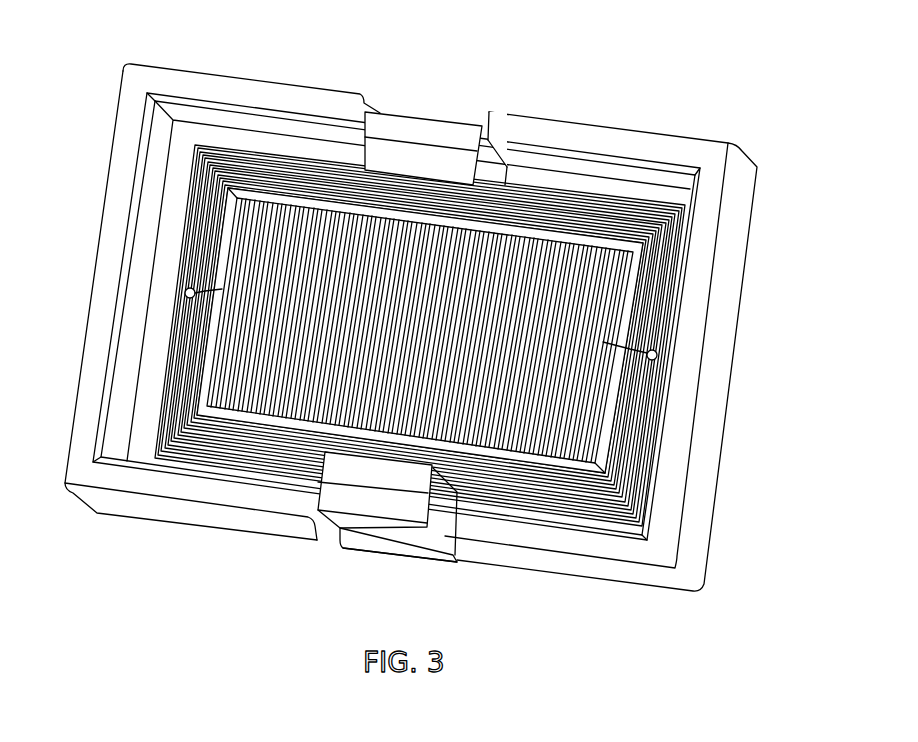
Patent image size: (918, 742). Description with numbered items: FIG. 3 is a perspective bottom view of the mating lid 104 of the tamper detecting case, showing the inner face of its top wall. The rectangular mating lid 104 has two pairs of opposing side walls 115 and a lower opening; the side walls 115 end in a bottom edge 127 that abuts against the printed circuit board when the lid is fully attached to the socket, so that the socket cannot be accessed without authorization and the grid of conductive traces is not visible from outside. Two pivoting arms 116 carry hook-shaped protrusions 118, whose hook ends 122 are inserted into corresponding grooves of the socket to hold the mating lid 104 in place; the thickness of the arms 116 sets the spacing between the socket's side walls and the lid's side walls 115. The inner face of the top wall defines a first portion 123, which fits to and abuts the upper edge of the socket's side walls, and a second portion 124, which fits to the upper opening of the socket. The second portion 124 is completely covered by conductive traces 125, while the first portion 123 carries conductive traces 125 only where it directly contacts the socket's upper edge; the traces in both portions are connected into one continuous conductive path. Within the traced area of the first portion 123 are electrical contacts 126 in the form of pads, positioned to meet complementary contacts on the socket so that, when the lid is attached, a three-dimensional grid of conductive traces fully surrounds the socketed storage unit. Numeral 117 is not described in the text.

The mating lid 104 is at (344, 88).
The opposing side walls 115 is at (105, 193).
The pivoting arms 116 is at (488, 140).
The lip 117 is at (353, 548).
The hook-shaped protrusions 118 is at (445, 157).
The hook ends 122 is at (490, 156).
The first portion 123 is at (657, 200).
The second portion 124 is at (685, 225).
The conductive traces 125 is at (565, 315).
The electrical contacts 126 is at (186, 289).
The bottom edge 127 is at (655, 150).